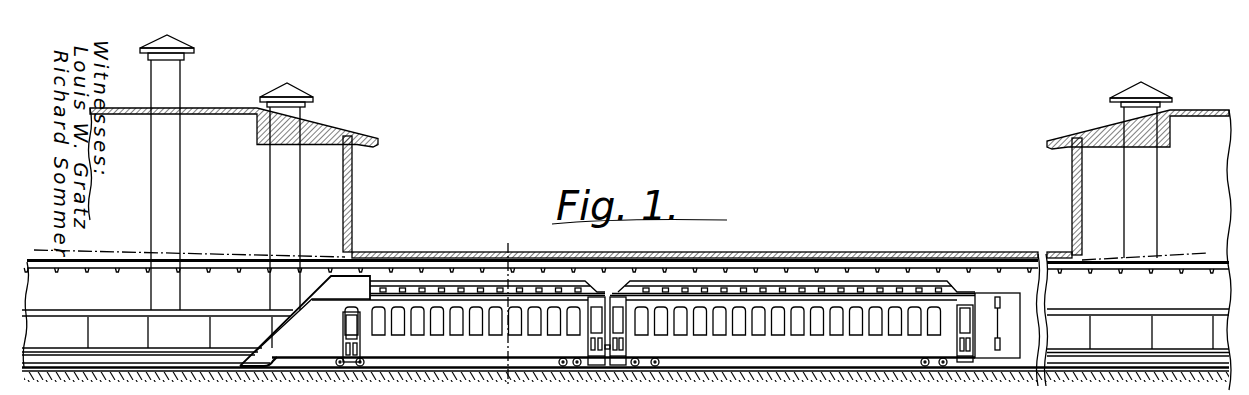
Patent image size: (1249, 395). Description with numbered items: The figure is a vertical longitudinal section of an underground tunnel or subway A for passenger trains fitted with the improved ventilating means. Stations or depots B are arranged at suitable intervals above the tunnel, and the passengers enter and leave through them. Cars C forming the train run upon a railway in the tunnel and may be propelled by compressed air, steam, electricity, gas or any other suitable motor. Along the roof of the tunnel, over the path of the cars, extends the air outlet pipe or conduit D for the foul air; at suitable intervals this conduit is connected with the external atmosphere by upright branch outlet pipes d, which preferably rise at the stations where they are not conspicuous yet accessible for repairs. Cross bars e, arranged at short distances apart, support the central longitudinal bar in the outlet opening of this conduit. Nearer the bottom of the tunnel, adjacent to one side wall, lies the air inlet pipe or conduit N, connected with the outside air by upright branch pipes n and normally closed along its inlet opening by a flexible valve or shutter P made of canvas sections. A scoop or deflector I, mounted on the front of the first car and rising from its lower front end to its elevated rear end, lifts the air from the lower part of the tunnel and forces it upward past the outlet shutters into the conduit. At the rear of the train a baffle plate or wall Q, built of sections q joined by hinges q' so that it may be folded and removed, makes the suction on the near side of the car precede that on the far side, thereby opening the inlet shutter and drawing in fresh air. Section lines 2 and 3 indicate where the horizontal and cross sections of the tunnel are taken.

The station or depot B is at (660, 249).
The upright branch pipe of air inlet conduit n is at (621, 188).
The upright branch outlet pipe d is at (716, 196).
The air inlet pipe or conduit N is at (96, 306).
The horizontal tunnel or subway A is at (1200, 305).
The cross bar e is at (209, 273).
The inlet valve or shutter P is at (126, 342).
The scoop or deflector I is at (308, 302).
The car C is at (623, 323).
The air outlet pipe or conduit D is at (829, 267).
The baffle plate or wall Q is at (997, 317).
The baffle wall section q is at (1001, 310).
The hinge q' is at (1006, 323).
The section line 2- 2 is at (619, 251).
The section line 3- 3 is at (508, 311).